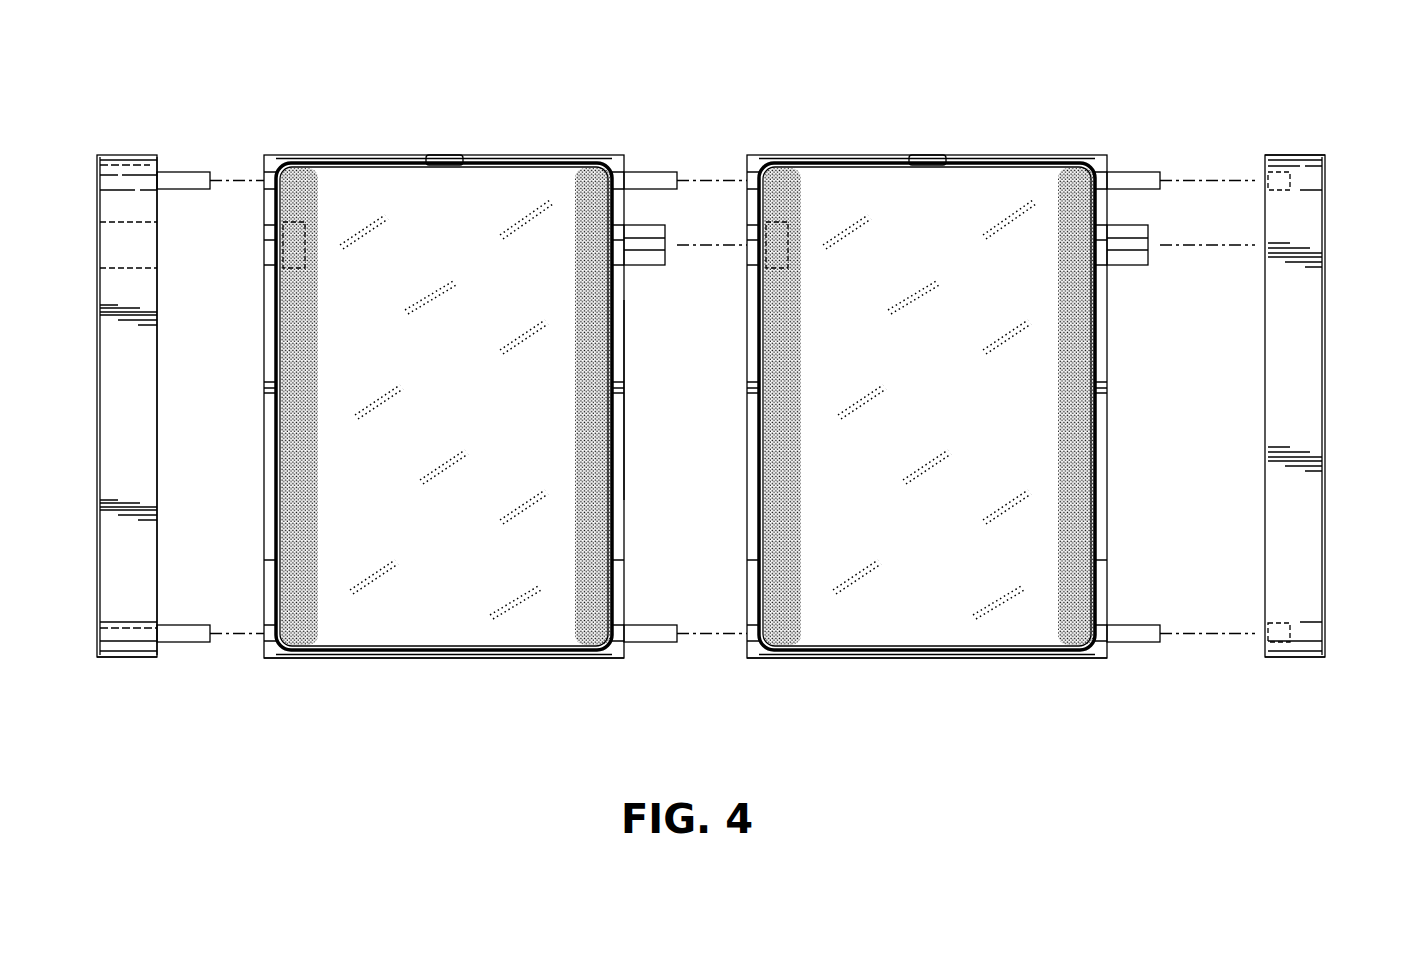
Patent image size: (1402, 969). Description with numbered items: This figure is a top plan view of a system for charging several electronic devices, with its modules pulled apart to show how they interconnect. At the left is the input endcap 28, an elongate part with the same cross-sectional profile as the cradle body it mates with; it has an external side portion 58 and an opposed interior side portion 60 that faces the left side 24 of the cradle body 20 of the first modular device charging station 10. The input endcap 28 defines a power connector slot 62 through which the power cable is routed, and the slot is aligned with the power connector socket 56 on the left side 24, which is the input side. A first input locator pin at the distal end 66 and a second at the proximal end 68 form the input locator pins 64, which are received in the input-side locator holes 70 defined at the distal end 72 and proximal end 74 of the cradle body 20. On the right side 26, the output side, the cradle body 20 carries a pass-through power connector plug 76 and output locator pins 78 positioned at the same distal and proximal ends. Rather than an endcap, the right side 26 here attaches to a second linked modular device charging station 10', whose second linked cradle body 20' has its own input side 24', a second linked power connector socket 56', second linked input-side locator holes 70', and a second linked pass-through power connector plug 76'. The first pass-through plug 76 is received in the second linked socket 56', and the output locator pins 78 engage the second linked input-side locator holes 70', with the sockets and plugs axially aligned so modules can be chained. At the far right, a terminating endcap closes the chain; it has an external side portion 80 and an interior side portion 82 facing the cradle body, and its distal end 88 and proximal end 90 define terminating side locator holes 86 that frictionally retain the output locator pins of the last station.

The first modular device charging station 10 is at (444, 696).
The second linked modular device charging station 10' is at (927, 696).
The cradle body 20 is at (444, 374).
The second linked cradle body 20' is at (927, 406).
The left side 24 is at (403, 406).
The second frame 24' is at (958, 406).
The right side 26 is at (628, 418).
The input endcap 28 is at (131, 155).
The power connector socket 56 is at (255, 276).
The second linked power connector socket 56' is at (742, 276).
The external side portion 58 is at (95, 392).
The interior side portion 60 is at (165, 384).
The power connector slot 62 is at (110, 245).
The input locator pins 64 is at (192, 172).
The distal end 66 is at (93, 145).
The proximal end 68 is at (107, 668).
The input-side locator holes 70 is at (436, 417).
The second linked input-side locator holes 70' is at (914, 406).
The distal end 72 is at (452, 152).
The proximal end 74 is at (434, 673).
The pass-through power connector plug 76 is at (685, 278).
The second linked pass-through power connector plug 76' is at (1181, 281).
The output locator pins 78 is at (650, 172).
The external side portion 80 is at (1328, 528).
The interior side portion 82 is at (1250, 370).
The terminating side locator holes 86 is at (1280, 172).
The distal end 88 is at (1310, 148).
The proximal end 90 is at (1308, 668).